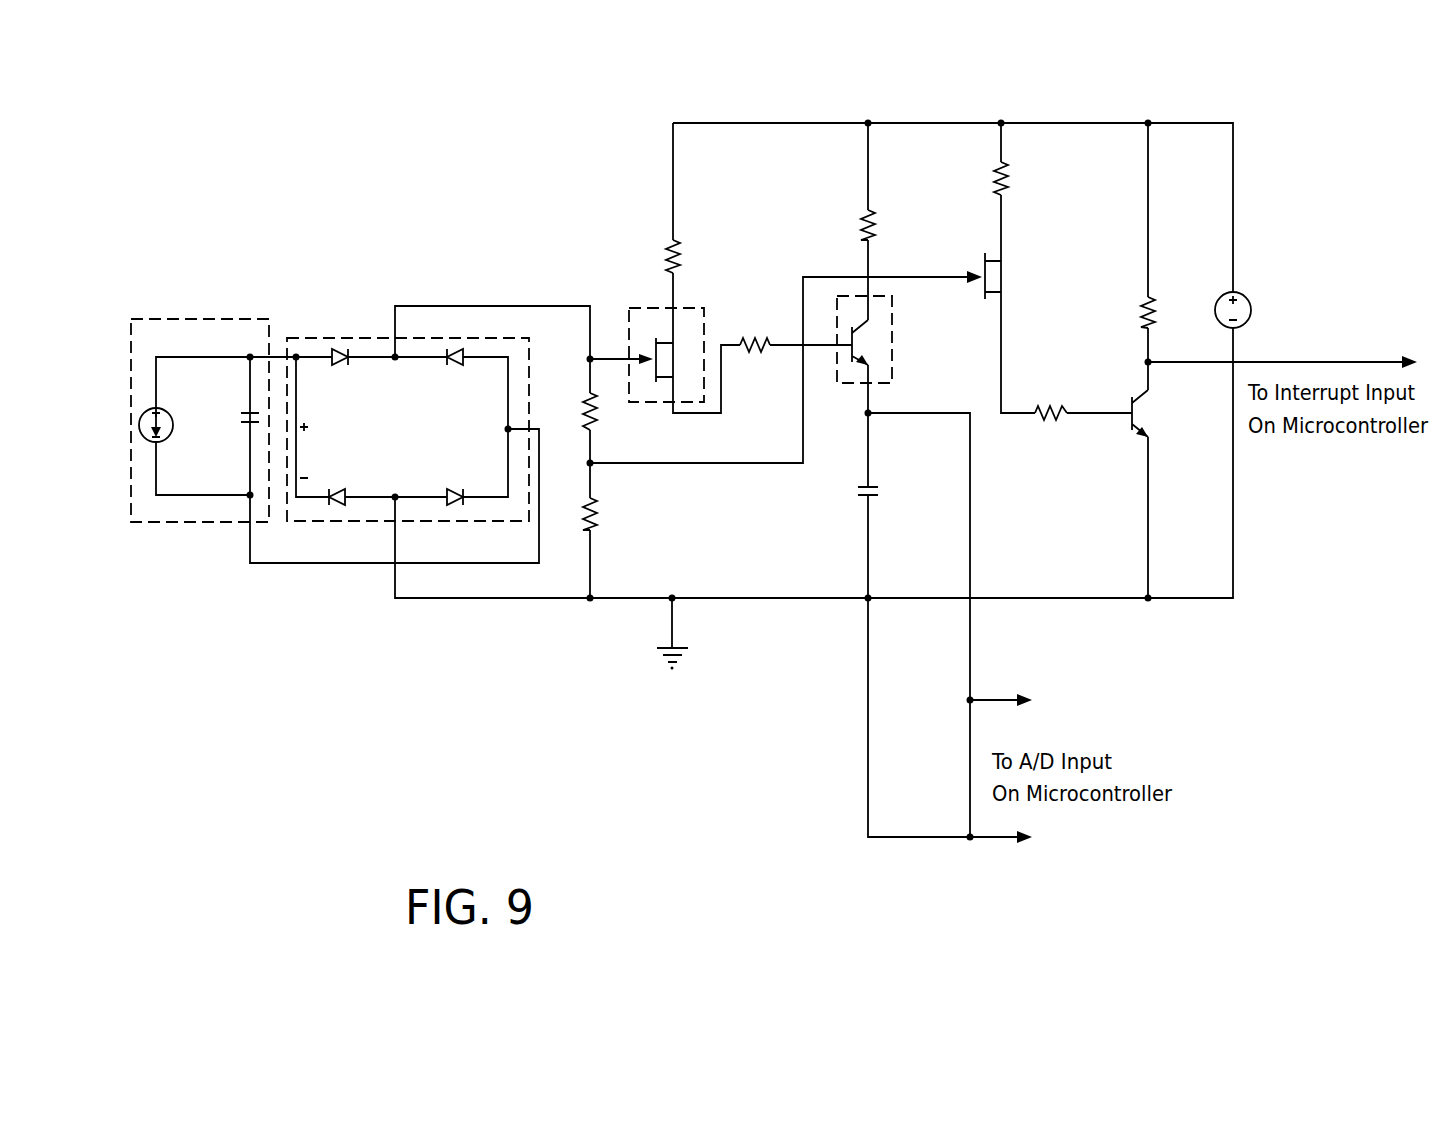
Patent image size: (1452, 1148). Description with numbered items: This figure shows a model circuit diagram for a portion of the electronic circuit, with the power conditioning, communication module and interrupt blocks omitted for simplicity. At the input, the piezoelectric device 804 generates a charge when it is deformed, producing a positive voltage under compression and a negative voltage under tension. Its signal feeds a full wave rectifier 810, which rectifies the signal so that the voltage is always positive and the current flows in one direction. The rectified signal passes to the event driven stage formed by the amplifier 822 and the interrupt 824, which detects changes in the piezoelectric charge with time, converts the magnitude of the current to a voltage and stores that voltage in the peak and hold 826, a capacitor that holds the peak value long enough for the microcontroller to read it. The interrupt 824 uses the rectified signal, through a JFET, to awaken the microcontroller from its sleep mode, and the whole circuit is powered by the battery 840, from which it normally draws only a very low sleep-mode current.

The piezoelectric device 804 is at (192, 319).
The full wave rectifier 810 is at (330, 338).
The amplifier 822 is at (697, 308).
The interrupt 824 is at (892, 361).
The peak and hold 826 is at (876, 485).
The battery 840 is at (1251, 297).